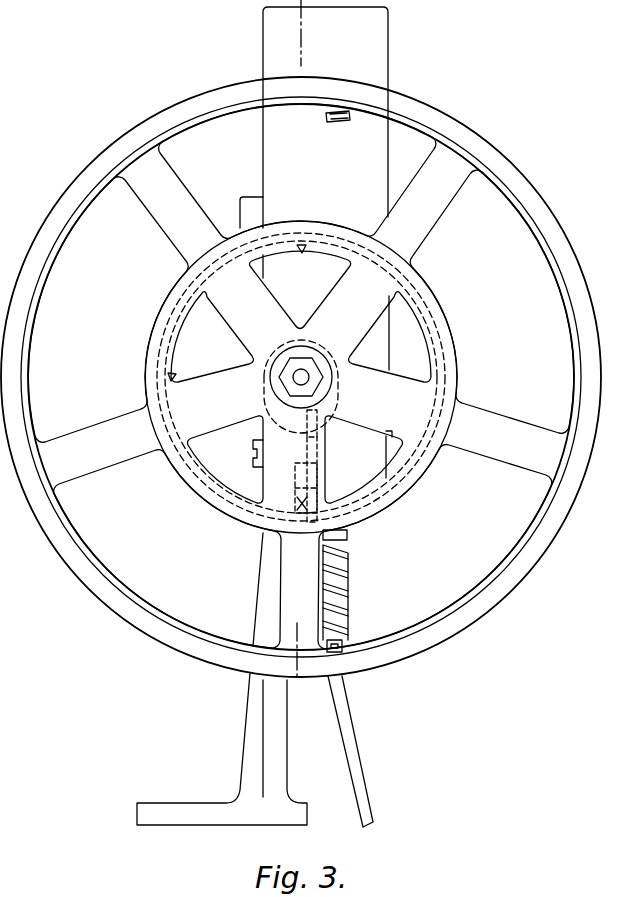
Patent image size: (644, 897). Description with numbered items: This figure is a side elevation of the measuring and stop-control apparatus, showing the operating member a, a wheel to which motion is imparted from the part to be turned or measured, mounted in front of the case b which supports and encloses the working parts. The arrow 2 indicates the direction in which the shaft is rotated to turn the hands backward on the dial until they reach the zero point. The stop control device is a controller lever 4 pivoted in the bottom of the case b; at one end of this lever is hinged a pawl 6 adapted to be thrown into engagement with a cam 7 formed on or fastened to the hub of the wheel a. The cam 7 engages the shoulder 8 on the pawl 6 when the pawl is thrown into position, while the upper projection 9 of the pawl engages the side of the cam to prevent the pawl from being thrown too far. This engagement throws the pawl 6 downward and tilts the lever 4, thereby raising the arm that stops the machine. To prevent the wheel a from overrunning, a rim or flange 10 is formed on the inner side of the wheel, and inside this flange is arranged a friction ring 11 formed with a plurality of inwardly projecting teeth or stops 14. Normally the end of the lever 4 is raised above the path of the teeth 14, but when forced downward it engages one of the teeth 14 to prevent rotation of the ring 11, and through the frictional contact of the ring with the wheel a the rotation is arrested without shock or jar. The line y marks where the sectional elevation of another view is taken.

The operating member a is at (599, 350).
The case b is at (316, 242).
The arrow 2 is at (280, 119).
The controller lever 4 is at (295, 473).
The pawl 6 is at (318, 492).
The cam 7 is at (283, 412).
The shoulder 8 is at (318, 437).
The upper projection 9 is at (312, 377).
The rim or flange 10 is at (436, 331).
The friction ring 11 is at (437, 383).
The teeth or stops 14 is at (302, 252).
The section line y— y is at (295, 371).